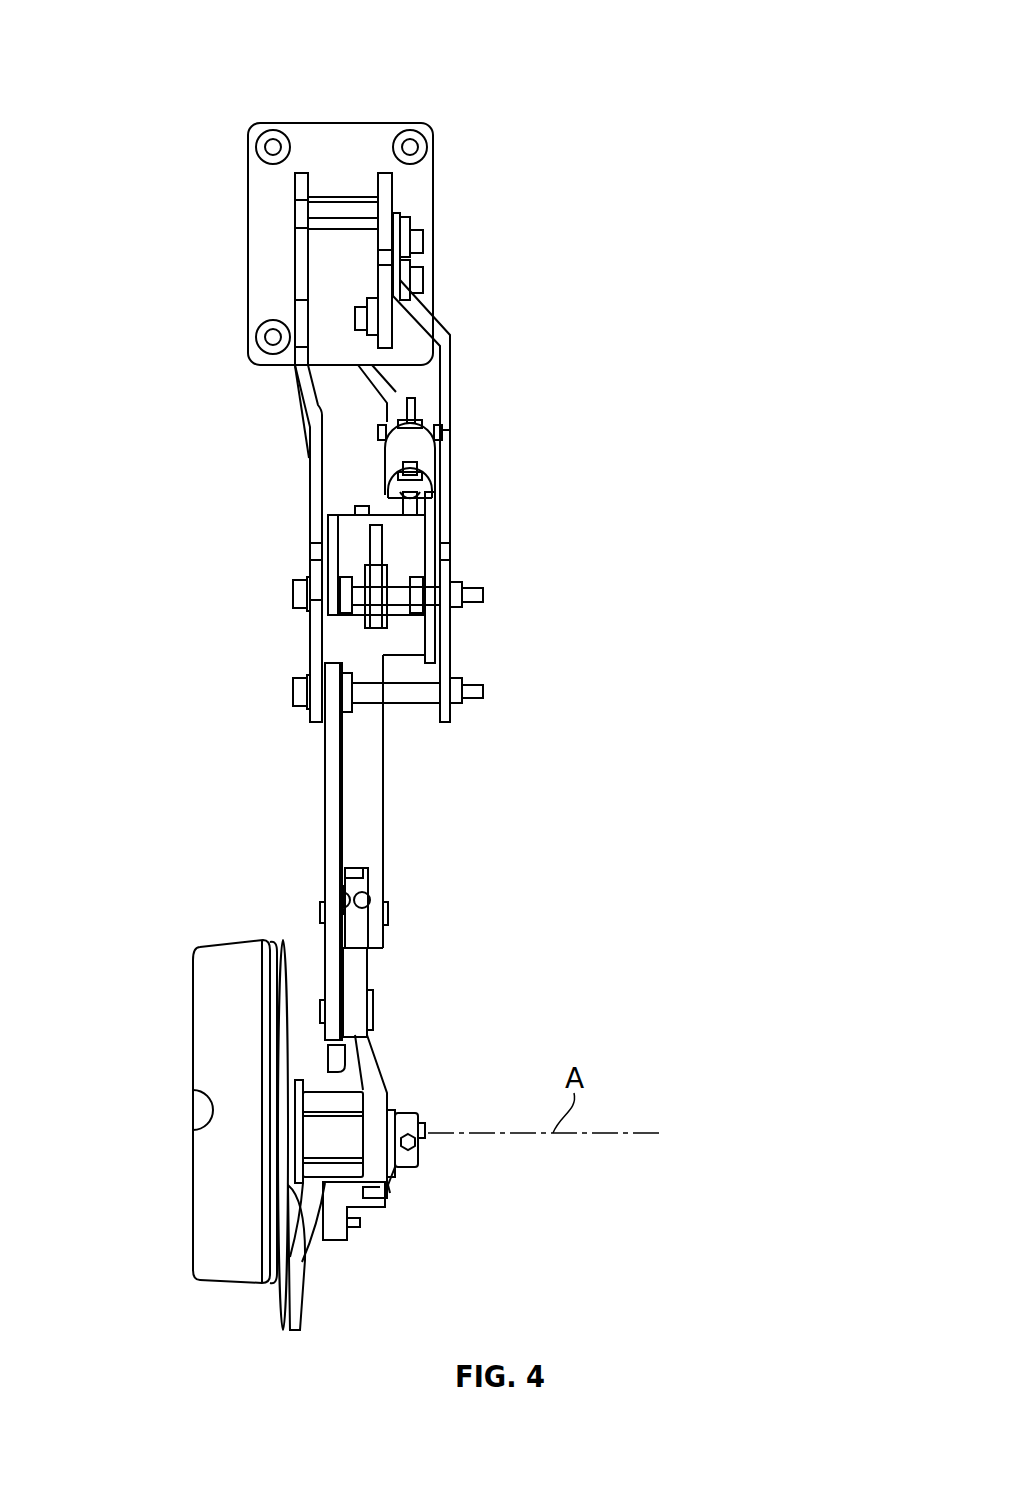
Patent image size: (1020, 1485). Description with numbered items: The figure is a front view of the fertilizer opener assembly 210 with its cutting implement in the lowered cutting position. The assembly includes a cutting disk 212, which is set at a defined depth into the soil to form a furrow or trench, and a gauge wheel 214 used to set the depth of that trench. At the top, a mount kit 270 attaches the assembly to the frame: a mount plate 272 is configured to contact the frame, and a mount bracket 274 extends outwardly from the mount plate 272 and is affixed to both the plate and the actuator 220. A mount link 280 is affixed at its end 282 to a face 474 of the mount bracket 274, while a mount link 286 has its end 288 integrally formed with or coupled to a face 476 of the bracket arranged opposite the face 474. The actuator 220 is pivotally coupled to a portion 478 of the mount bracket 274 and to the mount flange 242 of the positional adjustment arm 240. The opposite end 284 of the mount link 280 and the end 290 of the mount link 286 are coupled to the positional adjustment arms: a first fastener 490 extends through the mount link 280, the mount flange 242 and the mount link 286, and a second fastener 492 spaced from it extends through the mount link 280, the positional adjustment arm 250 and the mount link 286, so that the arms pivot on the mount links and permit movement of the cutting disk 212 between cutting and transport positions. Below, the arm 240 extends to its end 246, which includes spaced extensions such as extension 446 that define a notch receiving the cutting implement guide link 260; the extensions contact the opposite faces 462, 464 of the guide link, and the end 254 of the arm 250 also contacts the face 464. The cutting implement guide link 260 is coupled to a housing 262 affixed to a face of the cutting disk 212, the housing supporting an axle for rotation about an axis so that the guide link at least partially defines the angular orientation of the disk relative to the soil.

The fertilizer opener assembly 210 is at (445, 86).
The cutting disk 212 is at (275, 1290).
The gauge wheel 214 is at (223, 938).
The actuator 220 is at (410, 440).
The positional adjustment arm 240 is at (357, 767).
The mount flange 242 is at (400, 543).
The end 246 is at (378, 873).
The positional adjustment arm 250 is at (333, 740).
The end 254 is at (320, 1027).
The cutting implement guide link 260 is at (360, 968).
The housing 262 is at (332, 1127).
The mount kit 270 is at (466, 206).
The mount plate 272 is at (293, 140).
The mount bracket 274 is at (293, 228).
The mount link 280 is at (440, 462).
The end 282 is at (400, 263).
The end 284 is at (438, 618).
The mount link 286 is at (297, 428).
The end 288 is at (293, 303).
The end 290 is at (313, 612).
The extension 446 is at (375, 932).
The face 462 is at (372, 905).
The face 464 is at (343, 885).
The face 474 is at (386, 240).
The face 476 is at (293, 190).
The portion 478 is at (392, 395).
The first fastener 490 is at (402, 593).
The second fastener 492 is at (417, 693).